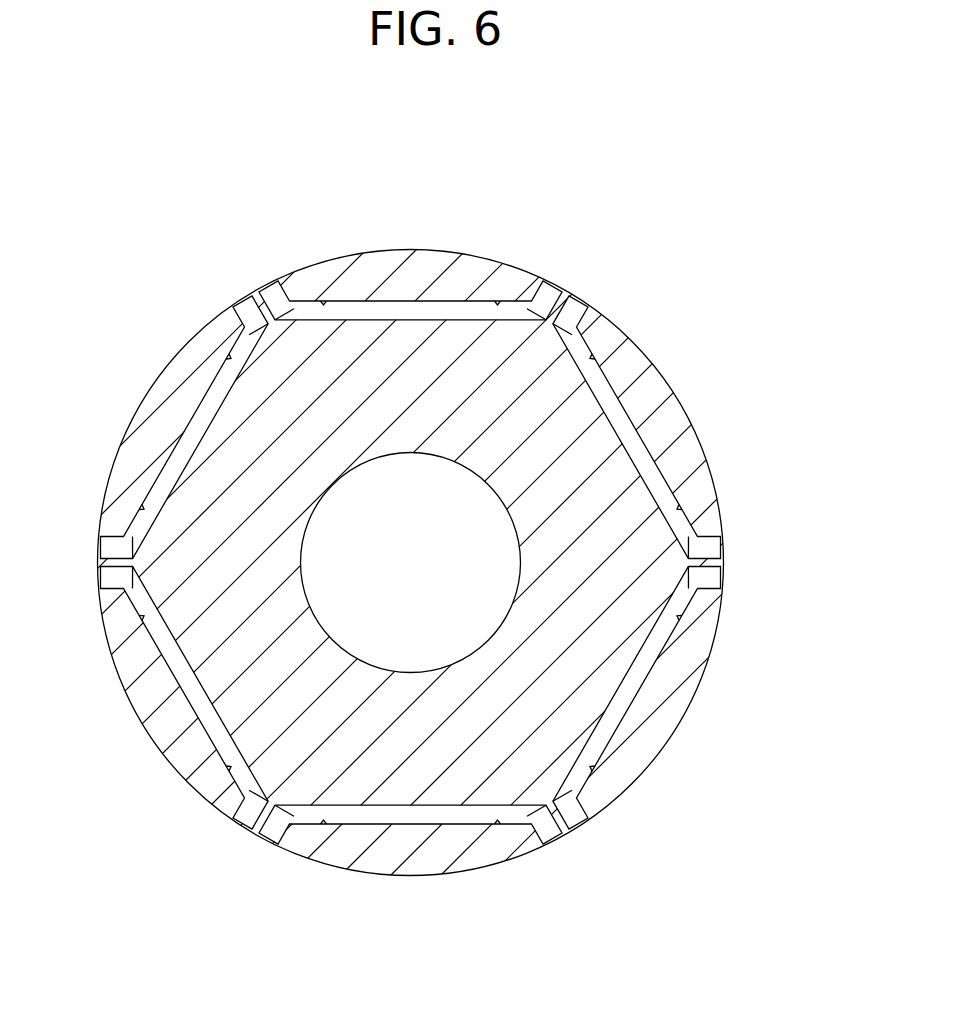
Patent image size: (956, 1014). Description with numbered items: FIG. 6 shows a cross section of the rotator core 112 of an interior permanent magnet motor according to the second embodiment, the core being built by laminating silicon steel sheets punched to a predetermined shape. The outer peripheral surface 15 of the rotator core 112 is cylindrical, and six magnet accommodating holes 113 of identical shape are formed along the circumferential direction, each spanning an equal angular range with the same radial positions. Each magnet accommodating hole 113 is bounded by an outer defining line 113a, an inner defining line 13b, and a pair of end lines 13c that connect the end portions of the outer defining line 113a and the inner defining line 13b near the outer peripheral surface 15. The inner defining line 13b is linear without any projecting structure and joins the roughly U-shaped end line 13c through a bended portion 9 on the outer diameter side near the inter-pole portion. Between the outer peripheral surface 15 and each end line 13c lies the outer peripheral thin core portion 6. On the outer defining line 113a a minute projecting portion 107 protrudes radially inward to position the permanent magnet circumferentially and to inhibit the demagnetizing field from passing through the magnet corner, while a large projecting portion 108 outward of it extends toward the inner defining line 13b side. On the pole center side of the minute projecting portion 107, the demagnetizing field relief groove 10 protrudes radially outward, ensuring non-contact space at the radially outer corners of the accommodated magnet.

The rotator core 112 is at (97, 134).
The outer peripheral surface 15 is at (150, 385).
The outer peripheral thin core portion 6 is at (242, 300).
The bended portion 9 is at (552, 332).
The demagnetizing field relief groove 10 is at (690, 615).
The minute projecting portion 107 is at (323, 298).
The large projecting portion 108 is at (270, 292).
The magnet accommodating hole 113 is at (600, 352).
The outer defining line 113a is at (638, 443).
The inner defining line 13b is at (590, 338).
The end line 13c is at (587, 297).